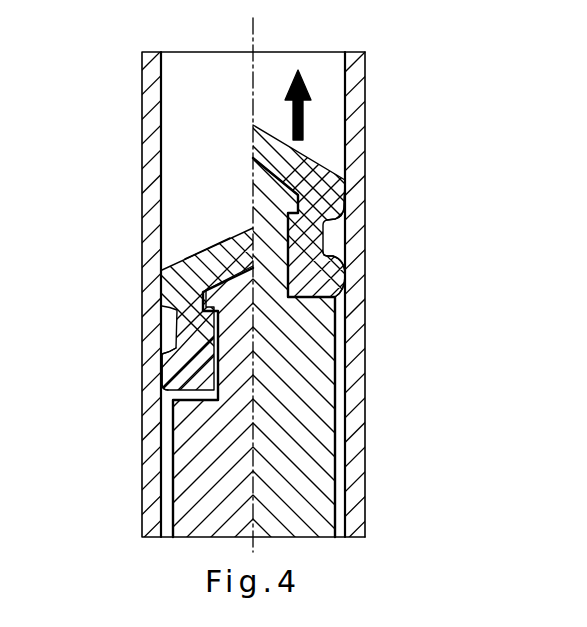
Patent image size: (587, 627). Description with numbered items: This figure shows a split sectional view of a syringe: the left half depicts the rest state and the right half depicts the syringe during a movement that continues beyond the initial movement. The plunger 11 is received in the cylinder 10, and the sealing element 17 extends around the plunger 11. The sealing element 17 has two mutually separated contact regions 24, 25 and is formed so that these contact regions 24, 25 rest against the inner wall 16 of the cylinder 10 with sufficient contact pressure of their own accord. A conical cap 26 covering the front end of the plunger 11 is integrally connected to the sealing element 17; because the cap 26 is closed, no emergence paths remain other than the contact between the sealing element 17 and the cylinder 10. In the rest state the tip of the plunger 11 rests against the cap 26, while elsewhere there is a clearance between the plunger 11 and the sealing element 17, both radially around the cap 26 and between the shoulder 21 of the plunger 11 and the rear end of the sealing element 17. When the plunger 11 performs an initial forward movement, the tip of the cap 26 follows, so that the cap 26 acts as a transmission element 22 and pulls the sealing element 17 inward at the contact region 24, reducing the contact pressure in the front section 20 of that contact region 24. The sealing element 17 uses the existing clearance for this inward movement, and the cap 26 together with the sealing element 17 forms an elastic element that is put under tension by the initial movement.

The cylinder 10 is at (148, 125).
The plunger 11 is at (318, 495).
The inner wall 16 is at (343, 80).
The sealing element 17 is at (165, 372).
The front section 20 is at (328, 177).
The shoulder 21 is at (205, 399).
The transmission element 22 is at (192, 264).
The contact region 24 is at (348, 200).
The contact region 25 is at (342, 272).
The conical cap 26 is at (200, 252).